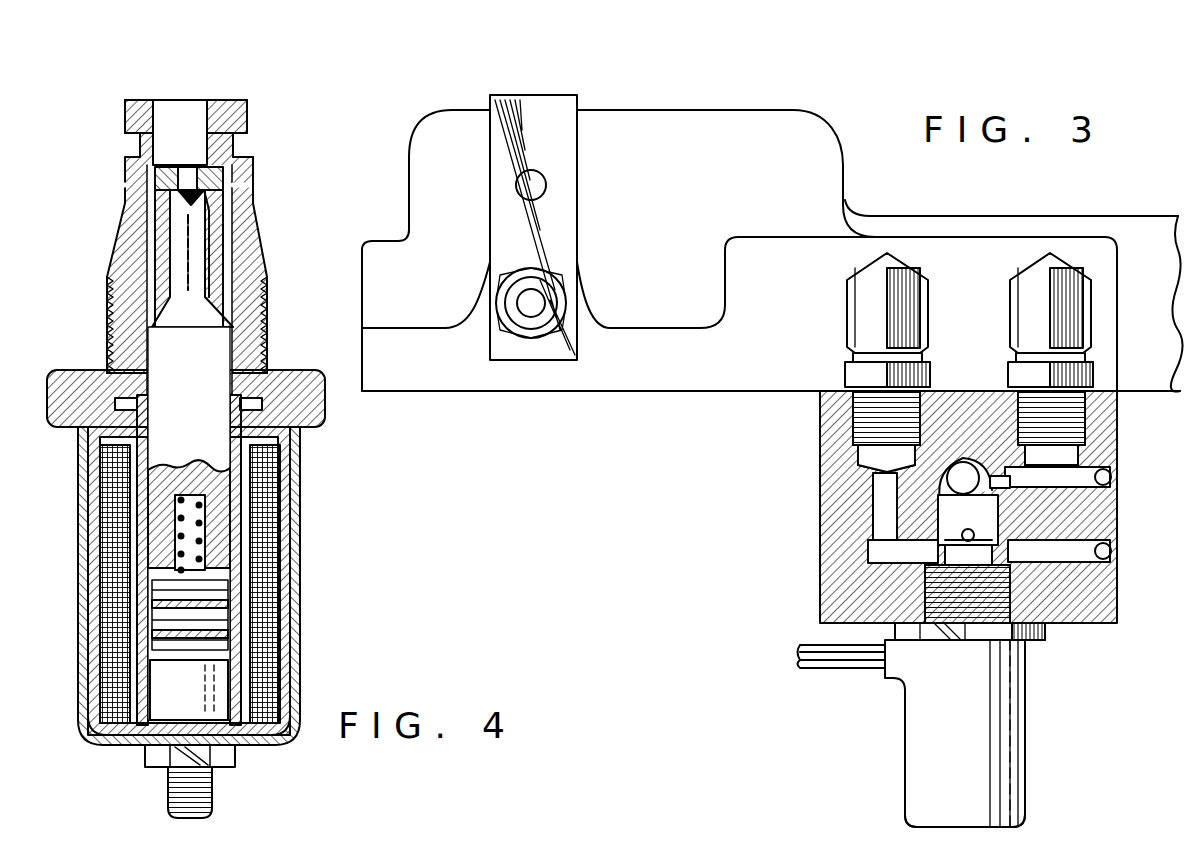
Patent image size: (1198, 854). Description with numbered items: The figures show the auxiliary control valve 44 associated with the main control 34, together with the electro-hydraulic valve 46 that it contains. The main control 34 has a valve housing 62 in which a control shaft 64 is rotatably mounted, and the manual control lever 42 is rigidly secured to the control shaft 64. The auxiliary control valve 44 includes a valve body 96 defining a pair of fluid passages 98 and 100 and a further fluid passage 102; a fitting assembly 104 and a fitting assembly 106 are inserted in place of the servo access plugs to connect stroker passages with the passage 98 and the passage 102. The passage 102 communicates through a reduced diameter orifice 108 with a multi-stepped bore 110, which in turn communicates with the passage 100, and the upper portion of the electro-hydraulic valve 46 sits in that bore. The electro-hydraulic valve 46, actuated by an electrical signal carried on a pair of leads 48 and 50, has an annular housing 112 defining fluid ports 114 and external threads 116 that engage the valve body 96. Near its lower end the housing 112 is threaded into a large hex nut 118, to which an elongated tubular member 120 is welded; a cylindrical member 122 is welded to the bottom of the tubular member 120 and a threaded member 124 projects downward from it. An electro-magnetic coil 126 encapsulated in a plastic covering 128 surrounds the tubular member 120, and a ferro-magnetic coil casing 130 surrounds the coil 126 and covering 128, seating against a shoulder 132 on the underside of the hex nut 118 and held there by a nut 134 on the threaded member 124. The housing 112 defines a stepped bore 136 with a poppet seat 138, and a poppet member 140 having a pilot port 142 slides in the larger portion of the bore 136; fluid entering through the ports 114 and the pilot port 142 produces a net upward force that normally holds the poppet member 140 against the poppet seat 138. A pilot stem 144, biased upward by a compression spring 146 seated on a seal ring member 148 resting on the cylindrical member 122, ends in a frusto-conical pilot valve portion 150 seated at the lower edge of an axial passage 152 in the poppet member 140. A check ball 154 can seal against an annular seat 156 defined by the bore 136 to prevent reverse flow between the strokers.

In FIG. 3, the main control 34 is at (858, 158).
In FIG. 3, the manual control lever 42 is at (563, 133).
In FIG. 3, the auxiliary control valve 44 is at (1140, 470).
In FIG. 3, the electro-hydraulic valve 46 is at (1036, 683).
In FIG. 4, the electro-hydraulic valve 46 is at (303, 150).
In FIG. 3, the lead 48 is at (815, 645).
In FIG. 3, the lead 50 is at (830, 668).
In FIG. 3, the valve housing 62 is at (935, 228).
In FIG. 3, the control shaft 64 is at (560, 303).
In FIG. 3, the valve body 96 is at (830, 545).
In FIG. 3, the fluid passage 98 is at (878, 508).
In FIG. 3, the fluid passage 100 is at (1060, 548).
In FIG. 3, the fluid passage 102 is at (1062, 475).
In FIG. 3, the fitting assembly 104 is at (840, 332).
In FIG. 3, the fitting assembly 106 is at (1000, 345).
In FIG. 3, the reduced diameter orifice 108 is at (1002, 476).
In FIG. 3, the multi-stepped bore 110 is at (998, 535).
In FIG. 4, the annular housing 112 is at (127, 176).
In FIG. 3, the fluid ports 114 is at (965, 543).
In FIG. 4, the fluid ports 114 is at (240, 185).
In FIG. 3, the external threads 116 is at (935, 595).
In FIG. 4, the external threads 116 is at (268, 300).
In FIG. 3, the hex nut 118 is at (1040, 636).
In FIG. 4, the hex nut 118 is at (64, 378).
In FIG. 4, the tubular member 120 is at (236, 499).
In FIG. 4, the cylindrical member 122 is at (213, 682).
In FIG. 4, the threaded member 124 is at (205, 808).
In FIG. 4, the electro-magnetic coil 126 is at (115, 502).
In FIG. 4, the plastic covering 128 is at (100, 547).
In FIG. 3, the coil casing 130 is at (922, 718).
In FIG. 4, the coil casing 130 is at (88, 598).
In FIG. 4, the shoulder 132 is at (95, 432).
In FIG. 4, the nut 134 is at (148, 759).
In FIG. 4, the stepped bore 136 is at (209, 99).
In FIG. 4, the poppet seat 138 is at (170, 170).
In FIG. 4, the poppet member 140 is at (165, 232).
In FIG. 4, the pilot port 142 is at (212, 205).
In FIG. 4, the pilot stem 144 is at (190, 240).
In FIG. 4, the compression spring 146 is at (190, 542).
In FIG. 4, the seal ring member 148 is at (205, 620).
In FIG. 4, the frusto-conical pilot valve portion 150 is at (186, 190).
In FIG. 4, the axial passage 152 is at (204, 166).
In FIG. 3, the check ball 154 is at (963, 465).
In FIG. 4, the annular seat 156 is at (158, 98).